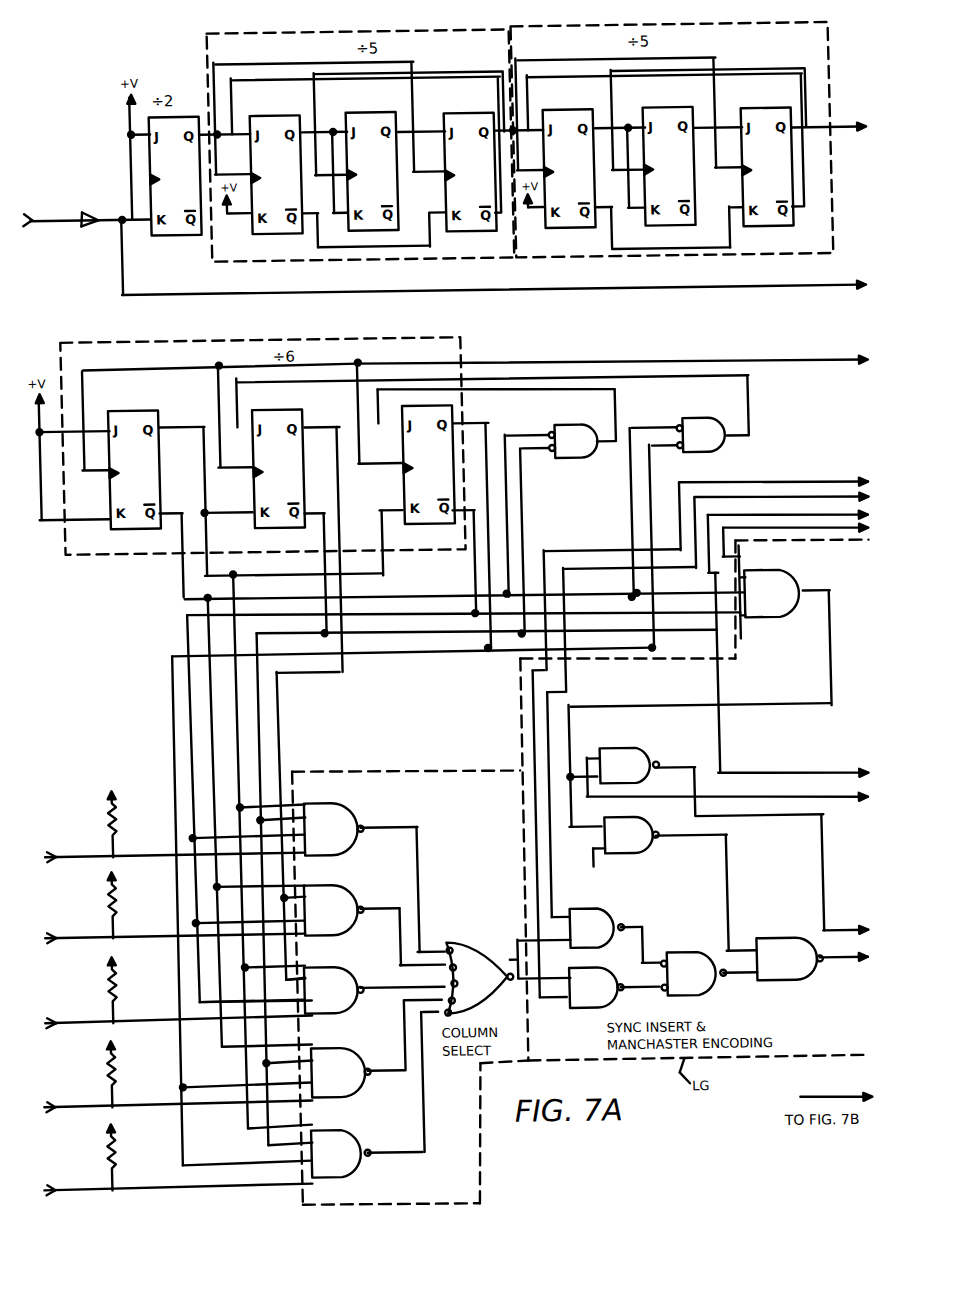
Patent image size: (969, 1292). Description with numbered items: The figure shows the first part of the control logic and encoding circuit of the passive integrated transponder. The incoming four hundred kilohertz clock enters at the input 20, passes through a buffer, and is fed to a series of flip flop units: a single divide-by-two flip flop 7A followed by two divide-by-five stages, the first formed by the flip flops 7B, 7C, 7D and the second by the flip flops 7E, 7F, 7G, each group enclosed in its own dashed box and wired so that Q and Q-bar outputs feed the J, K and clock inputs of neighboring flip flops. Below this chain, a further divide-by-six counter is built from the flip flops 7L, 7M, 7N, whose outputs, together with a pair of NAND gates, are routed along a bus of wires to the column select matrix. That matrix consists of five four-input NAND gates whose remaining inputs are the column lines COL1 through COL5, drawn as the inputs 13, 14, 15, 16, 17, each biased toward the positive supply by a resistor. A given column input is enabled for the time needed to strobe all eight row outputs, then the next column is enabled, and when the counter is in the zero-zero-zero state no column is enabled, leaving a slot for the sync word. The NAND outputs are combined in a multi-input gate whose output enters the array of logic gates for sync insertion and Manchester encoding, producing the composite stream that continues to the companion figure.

The column 1 line 13 is at (172, 839).
The column 2 line 14 is at (172, 920).
The column 3 line 15 is at (176, 1005).
The column 4 line 16 is at (176, 1089).
The column 5 line 17 is at (176, 1172).
The 400 KHz clock input 20 is at (443, 243).
The divide-by-2 flip-flop 7A is at (175, 176).
The flip-flop 7B is at (276, 174).
The flip-flop 7C is at (372, 171).
The flip-flop 7D is at (470, 172).
The flip-flop 7E is at (569, 168).
The flip-flop 7F is at (669, 166).
The flip-flop 7G is at (767, 167).
The flip-flop 7L is at (134, 469).
The flip-flop 7M is at (278, 468).
The flip-flop 7N is at (428, 464).